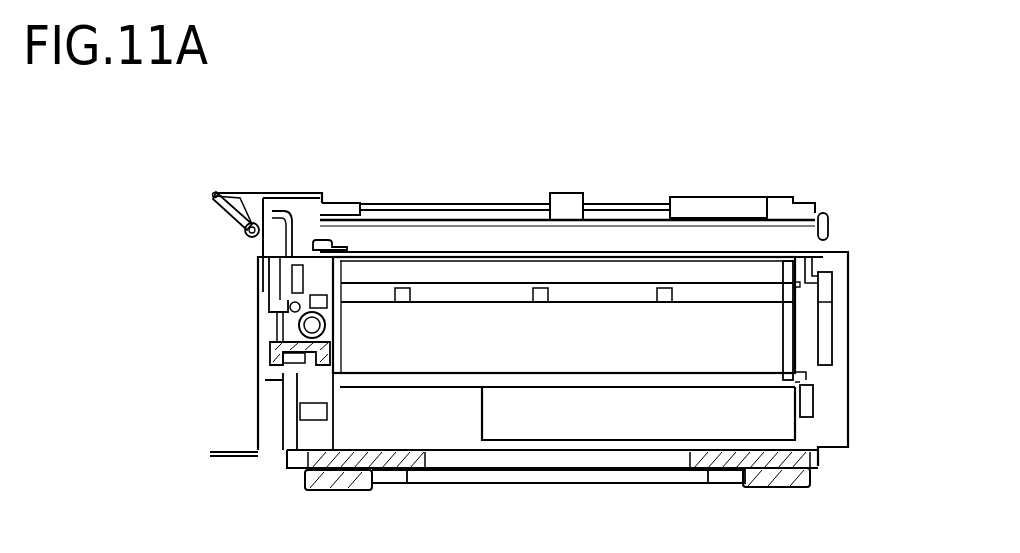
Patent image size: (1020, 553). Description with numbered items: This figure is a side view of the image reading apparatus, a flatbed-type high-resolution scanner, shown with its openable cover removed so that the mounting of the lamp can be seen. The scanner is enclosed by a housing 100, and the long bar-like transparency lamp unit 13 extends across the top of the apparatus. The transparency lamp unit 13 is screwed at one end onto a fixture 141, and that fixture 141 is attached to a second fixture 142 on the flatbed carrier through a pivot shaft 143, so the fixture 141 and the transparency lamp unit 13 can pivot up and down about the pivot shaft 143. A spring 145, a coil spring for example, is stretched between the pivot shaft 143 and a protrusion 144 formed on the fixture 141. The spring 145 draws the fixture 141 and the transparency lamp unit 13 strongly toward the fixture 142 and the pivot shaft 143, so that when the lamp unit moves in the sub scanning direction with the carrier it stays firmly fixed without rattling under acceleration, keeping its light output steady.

The transparency lamp unit 13 is at (457, 204).
The housing 100 is at (850, 380).
The fixture 141 is at (287, 192).
The fixture 142 is at (264, 290).
The pivot shaft 143 is at (252, 238).
The protrusion 144 is at (213, 195).
The spring 145 is at (232, 222).